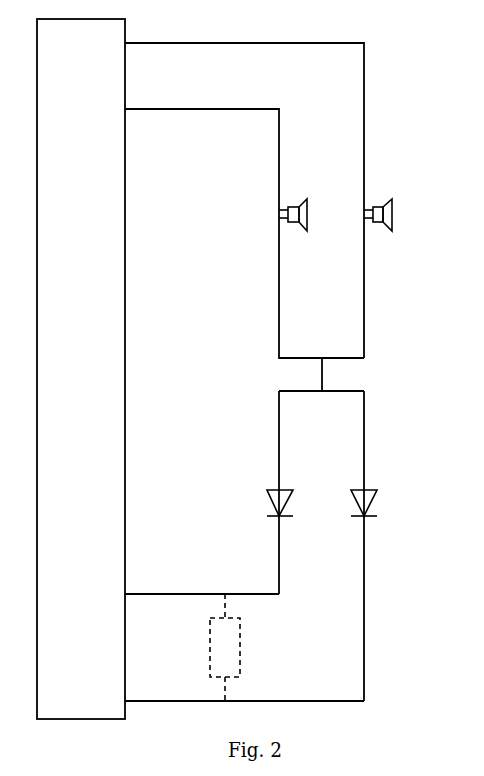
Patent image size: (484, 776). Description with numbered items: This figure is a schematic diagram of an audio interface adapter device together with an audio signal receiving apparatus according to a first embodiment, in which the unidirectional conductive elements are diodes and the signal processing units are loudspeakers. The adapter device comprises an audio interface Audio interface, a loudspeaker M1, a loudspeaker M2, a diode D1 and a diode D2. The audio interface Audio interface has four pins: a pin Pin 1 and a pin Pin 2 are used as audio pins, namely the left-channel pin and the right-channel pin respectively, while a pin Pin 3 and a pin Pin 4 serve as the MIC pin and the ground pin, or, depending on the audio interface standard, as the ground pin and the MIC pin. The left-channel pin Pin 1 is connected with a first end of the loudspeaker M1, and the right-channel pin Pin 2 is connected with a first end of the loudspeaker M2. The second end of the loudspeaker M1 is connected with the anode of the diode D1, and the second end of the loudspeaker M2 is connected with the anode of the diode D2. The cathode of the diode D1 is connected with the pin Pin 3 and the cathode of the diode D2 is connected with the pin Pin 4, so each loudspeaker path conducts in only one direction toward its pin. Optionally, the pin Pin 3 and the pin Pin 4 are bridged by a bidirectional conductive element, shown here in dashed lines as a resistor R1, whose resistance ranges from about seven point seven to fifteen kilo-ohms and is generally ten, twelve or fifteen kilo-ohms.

The audio interface Audio interface is at (81, 369).
The pin 1 Pin 1 is at (244, 191).
The pin 2 Pin 2 is at (244, 221).
The pin 3 Pin 3 is at (202, 578).
The pin 4 Pin 4 is at (244, 687).
The loudspeaker M1 is at (400, 215).
The loudspeaker M2 is at (267, 215).
The diode D1 is at (260, 503).
The diode D2 is at (392, 503).
The resistor R1 is at (225, 647).